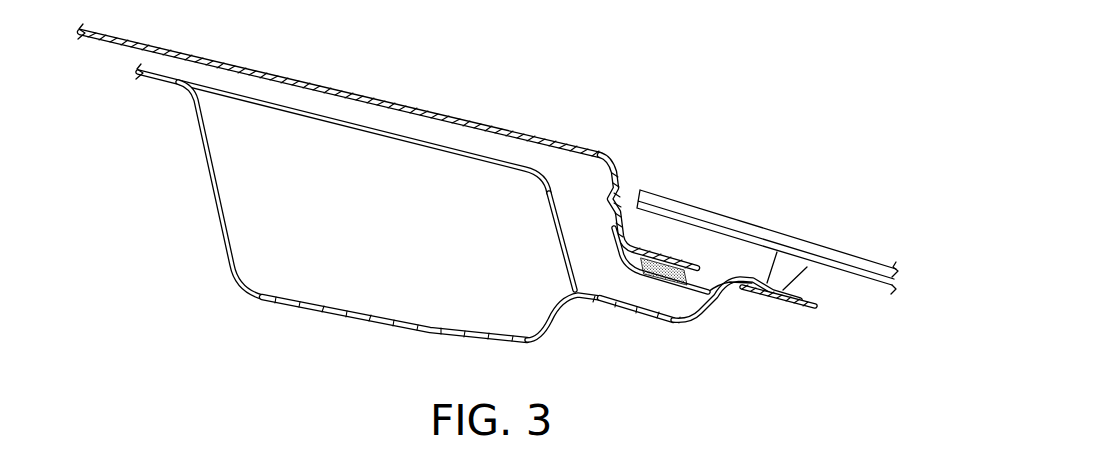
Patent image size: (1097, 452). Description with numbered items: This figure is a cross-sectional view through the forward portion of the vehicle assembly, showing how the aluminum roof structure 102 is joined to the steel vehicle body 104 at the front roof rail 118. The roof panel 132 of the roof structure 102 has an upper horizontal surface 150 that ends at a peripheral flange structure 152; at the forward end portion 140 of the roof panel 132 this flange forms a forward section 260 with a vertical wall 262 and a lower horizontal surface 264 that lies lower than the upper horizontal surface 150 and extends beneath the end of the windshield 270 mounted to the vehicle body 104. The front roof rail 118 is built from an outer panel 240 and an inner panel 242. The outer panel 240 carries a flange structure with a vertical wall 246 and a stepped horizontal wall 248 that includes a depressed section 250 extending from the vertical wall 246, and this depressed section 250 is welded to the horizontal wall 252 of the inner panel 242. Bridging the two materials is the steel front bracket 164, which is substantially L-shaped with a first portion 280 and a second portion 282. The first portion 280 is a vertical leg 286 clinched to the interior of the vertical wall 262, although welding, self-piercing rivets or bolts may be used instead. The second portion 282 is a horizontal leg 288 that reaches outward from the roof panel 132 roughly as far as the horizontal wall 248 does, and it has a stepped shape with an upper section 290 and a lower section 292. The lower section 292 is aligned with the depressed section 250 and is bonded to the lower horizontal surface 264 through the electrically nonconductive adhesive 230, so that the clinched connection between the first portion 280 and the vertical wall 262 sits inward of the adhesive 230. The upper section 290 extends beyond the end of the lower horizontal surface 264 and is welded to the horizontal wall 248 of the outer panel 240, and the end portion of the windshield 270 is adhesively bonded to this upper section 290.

The roof structure 102 is at (475, 43).
The vehicle body 104 is at (173, 266).
The front roof rail 118 is at (314, 339).
The roof panel 132 is at (334, 80).
The forward end portion 140 is at (578, 152).
The upper horizontal surface 150 is at (383, 99).
The flange structure 152 is at (627, 134).
The front bracket 164 is at (585, 247).
The electrically nonconductive adhesive 230 is at (690, 258).
The outer panel 240 is at (371, 130).
The inner panel 242 is at (367, 313).
The vertical wall 246 is at (556, 223).
The horizontal wall 248 is at (700, 313).
The depressed section 250 is at (611, 307).
The inner panel horizontal wall 252 is at (637, 323).
The forward section 260 is at (651, 225).
The vertical wall 262 is at (622, 184).
The lower horizontal surface 264 is at (672, 256).
The windshield 270 is at (846, 245).
The first portion 280 is at (617, 234).
The second portion 282 is at (686, 322).
The vertical leg 286 is at (606, 194).
The horizontal leg 288 is at (747, 289).
The upper section 290 is at (797, 309).
The lower section 292 is at (620, 270).